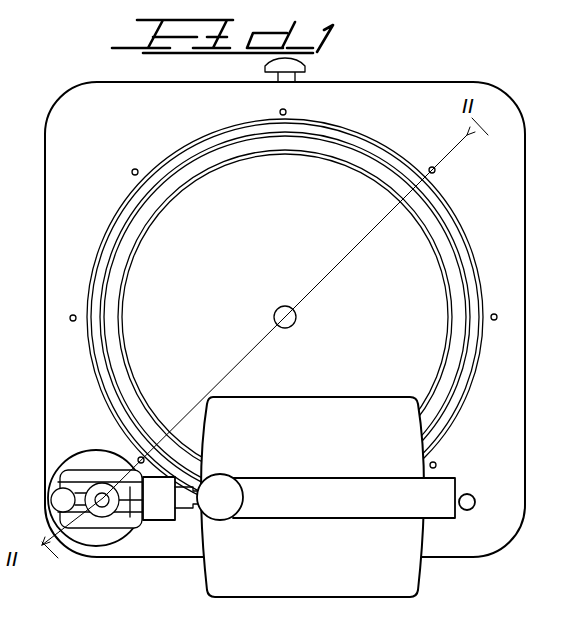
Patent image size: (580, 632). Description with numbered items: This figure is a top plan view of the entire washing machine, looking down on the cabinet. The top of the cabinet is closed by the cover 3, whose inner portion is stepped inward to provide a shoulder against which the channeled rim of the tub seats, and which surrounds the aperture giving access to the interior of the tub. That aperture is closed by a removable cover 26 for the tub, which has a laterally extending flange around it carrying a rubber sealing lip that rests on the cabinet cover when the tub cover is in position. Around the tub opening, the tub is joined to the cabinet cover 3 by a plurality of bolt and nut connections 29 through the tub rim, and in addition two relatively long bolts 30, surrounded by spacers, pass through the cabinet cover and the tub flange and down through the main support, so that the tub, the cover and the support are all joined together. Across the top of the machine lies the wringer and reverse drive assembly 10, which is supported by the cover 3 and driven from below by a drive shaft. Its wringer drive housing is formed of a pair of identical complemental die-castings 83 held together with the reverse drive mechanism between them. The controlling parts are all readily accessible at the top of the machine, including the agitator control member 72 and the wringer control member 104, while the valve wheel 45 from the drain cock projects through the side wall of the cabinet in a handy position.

The cover 3 is at (492, 258).
The wringer and reverse drive assembly 10 is at (312, 497).
The removable cover 26 is at (257, 322).
The bolt and nut connections 29 is at (138, 170).
The long bolts 30 is at (432, 167).
The valve wheel 45 is at (305, 66).
The agitator control member 72 is at (470, 494).
The castings 83 is at (110, 518).
The wringer control member 104 is at (61, 495).